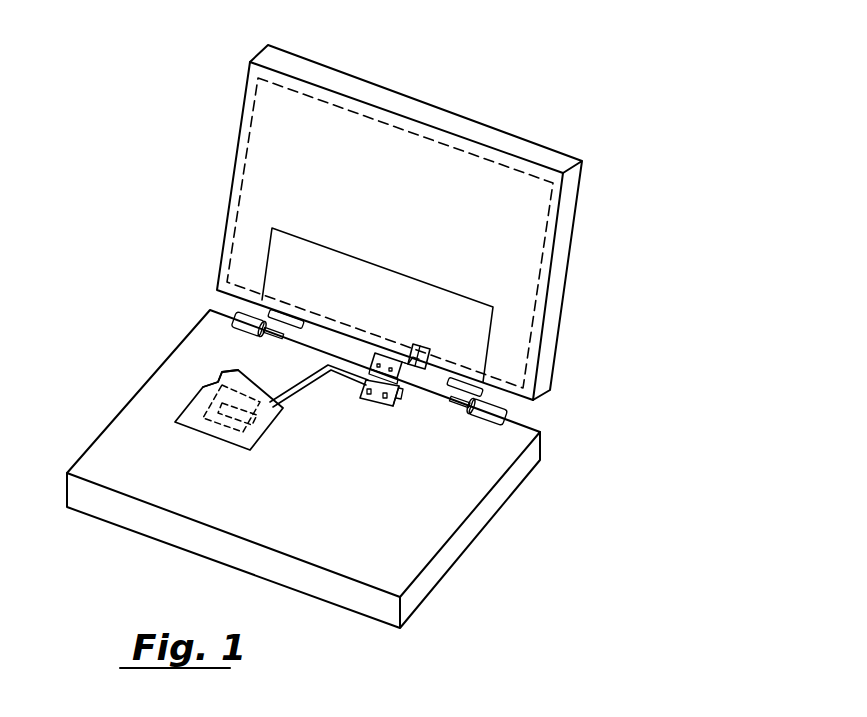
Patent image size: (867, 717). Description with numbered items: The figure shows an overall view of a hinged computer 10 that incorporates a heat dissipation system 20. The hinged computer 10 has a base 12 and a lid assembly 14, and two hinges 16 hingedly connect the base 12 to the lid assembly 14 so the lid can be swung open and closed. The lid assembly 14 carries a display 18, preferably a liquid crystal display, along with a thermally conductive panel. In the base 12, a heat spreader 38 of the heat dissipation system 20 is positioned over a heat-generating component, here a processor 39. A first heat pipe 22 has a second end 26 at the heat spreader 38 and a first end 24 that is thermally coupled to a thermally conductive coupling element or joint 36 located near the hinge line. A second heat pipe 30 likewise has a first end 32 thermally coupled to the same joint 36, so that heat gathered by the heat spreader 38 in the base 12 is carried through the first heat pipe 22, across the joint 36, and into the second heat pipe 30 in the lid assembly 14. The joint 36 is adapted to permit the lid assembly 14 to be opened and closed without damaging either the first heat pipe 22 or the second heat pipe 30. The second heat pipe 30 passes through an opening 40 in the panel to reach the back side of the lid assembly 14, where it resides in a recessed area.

The hinged computer 10 is at (612, 137).
The base 12 is at (477, 527).
The lid assembly 14 is at (557, 296).
The hinges 16 is at (236, 315).
The display 18 is at (326, 171).
The heat dissipation system 20 is at (305, 417).
The first heat pipe 22 is at (295, 388).
The first end 24 is at (362, 386).
The second end 26 is at (221, 406).
The second heat pipe 30 is at (432, 356).
The first end 32 is at (413, 386).
The thermally conductive coupling element or joint 36 is at (400, 396).
The heat spreader 38 is at (236, 448).
The processor 39 is at (217, 390).
The opening 40 is at (417, 347).